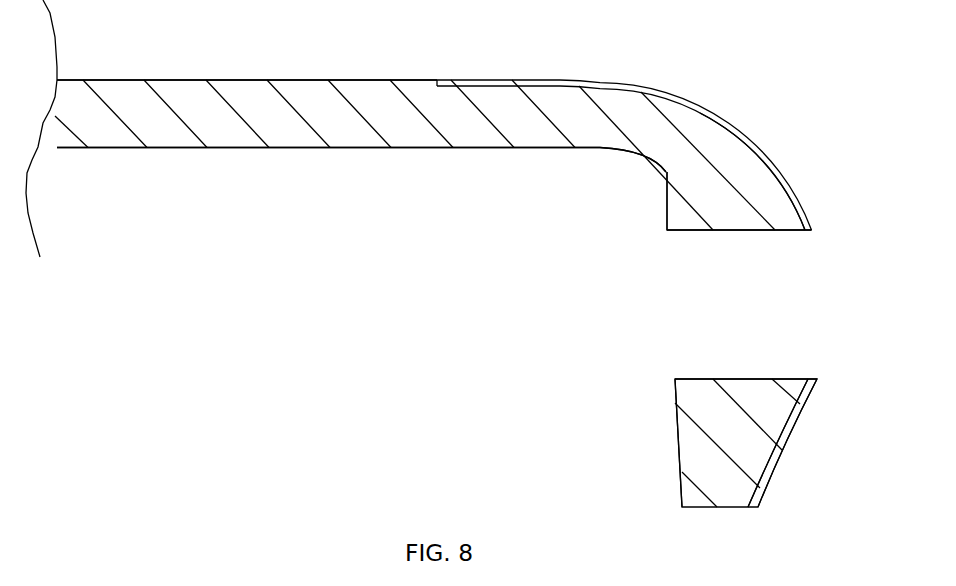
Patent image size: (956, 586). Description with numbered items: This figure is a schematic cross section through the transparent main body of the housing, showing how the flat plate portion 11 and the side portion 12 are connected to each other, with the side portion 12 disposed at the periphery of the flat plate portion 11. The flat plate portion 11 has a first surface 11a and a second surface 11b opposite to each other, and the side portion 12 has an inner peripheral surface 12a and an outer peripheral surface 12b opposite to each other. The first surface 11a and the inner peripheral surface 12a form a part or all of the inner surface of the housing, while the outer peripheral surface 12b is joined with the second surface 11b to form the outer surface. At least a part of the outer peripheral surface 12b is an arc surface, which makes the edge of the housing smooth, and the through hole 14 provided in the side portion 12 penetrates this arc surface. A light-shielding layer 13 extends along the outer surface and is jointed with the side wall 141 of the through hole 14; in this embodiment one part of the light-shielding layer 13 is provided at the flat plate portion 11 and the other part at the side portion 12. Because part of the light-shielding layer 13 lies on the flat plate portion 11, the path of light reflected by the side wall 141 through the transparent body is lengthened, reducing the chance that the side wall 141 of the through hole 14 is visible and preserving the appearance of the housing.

The flat plate portion 11 is at (502, 100).
The first surface 11a is at (237, 150).
The second surface 11b is at (199, 79).
The side portion 12 is at (727, 218).
The inner peripheral surface 12a is at (665, 212).
The outer peripheral surface 12b is at (747, 147).
The light-shielding layer 13 is at (708, 107).
The through hole 14 is at (803, 316).
The side wall 141 is at (760, 232).